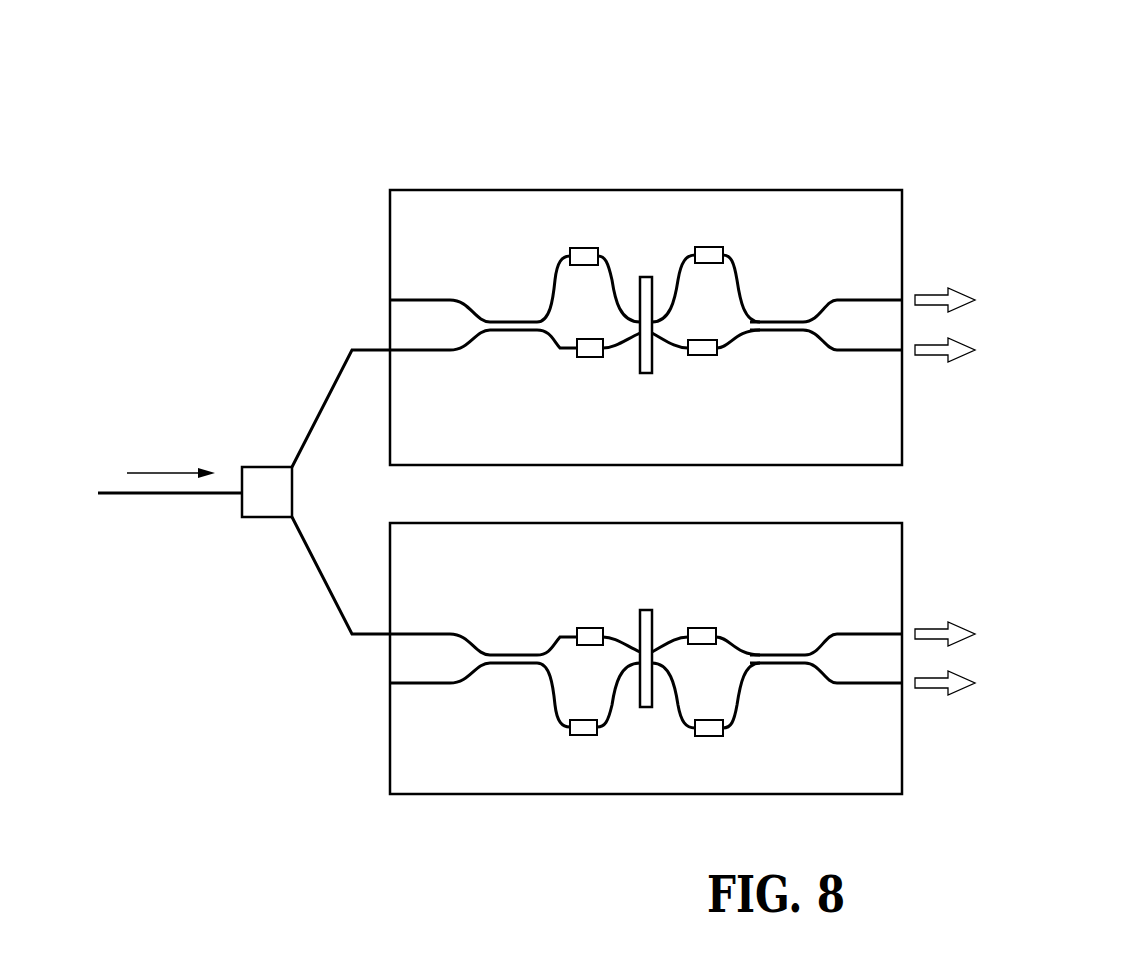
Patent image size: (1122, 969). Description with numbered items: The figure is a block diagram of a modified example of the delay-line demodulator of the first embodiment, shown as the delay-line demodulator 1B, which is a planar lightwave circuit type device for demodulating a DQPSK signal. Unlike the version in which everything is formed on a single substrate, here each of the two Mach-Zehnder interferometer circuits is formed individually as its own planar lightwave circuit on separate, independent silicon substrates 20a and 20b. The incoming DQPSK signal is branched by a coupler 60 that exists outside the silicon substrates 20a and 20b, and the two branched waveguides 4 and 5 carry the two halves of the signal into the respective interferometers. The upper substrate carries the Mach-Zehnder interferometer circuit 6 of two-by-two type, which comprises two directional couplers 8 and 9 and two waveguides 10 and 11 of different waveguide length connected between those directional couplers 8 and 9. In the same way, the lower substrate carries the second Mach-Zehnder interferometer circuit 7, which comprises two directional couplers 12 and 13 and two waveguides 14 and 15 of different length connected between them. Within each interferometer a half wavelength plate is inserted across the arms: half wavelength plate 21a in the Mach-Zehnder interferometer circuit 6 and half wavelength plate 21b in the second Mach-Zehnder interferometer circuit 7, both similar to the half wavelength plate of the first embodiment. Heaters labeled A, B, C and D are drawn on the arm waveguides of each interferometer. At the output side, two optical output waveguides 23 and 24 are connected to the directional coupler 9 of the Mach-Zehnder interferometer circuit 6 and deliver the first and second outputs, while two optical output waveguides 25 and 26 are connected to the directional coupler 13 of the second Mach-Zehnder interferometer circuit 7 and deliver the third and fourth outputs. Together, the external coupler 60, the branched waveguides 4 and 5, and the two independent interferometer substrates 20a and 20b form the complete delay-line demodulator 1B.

The delay-line demodulator 1B is at (714, 135).
The coupler 60 is at (270, 518).
The silicon substrate 20a is at (543, 186).
The silicon substrate 20b is at (572, 799).
The branched waveguide 4 is at (432, 352).
The branched waveguide 5 is at (443, 634).
The Mach-Zehnder interferometer circuit 6 is at (551, 274).
The second Mach-Zehnder interferometer circuit 7 is at (551, 721).
The directional coupler 8 is at (505, 322).
The directional coupler 9 is at (772, 318).
The waveguide 10 is at (550, 348).
The waveguide 11 is at (604, 259).
The directional coupler 12 is at (513, 655).
The directional coupler 13 is at (768, 665).
The waveguide 14 is at (561, 640).
The waveguide 15 is at (627, 721).
The half wavelength plate 21a is at (645, 277).
The half wavelength plate 21b is at (645, 610).
The optical output waveguide 23 is at (870, 300).
The optical output waveguide 24 is at (870, 352).
The optical output waveguide 25 is at (870, 635).
The optical output waveguide 26 is at (870, 685).